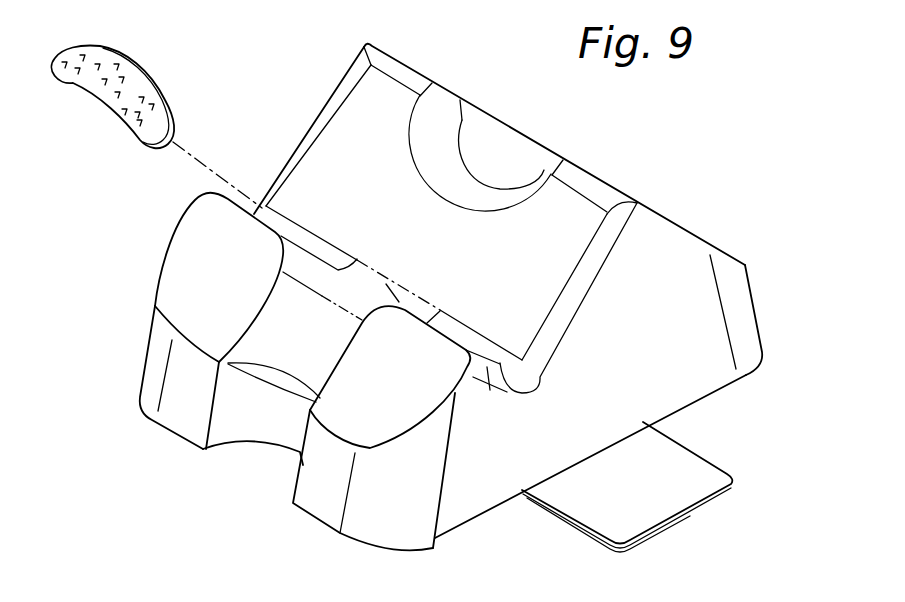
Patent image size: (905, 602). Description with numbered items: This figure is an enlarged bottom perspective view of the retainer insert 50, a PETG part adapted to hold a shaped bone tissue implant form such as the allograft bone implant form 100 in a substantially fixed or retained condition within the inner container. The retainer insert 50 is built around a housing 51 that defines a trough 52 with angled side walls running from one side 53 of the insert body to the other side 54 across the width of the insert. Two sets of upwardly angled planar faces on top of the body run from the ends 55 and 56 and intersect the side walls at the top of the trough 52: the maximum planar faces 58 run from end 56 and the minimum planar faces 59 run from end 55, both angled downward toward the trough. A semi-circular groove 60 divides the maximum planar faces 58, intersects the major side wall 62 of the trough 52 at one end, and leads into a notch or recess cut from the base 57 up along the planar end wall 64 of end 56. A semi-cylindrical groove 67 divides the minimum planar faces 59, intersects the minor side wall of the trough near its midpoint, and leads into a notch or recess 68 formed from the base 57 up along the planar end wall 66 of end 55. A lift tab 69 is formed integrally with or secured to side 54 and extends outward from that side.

The retainer insert 50 is at (767, 348).
The housing 51 is at (672, 410).
The trough 52 is at (483, 386).
The side 53 is at (318, 138).
The side 54 is at (670, 354).
The end 55 is at (163, 427).
The end 56 is at (705, 244).
The base 57 is at (445, 537).
The maximum planar faces 58 is at (633, 204).
The minimum planar faces 59 is at (226, 289).
The semi-circular groove 60 is at (507, 163).
The major side wall 62 is at (518, 274).
The planar end wall 64 is at (756, 320).
The planar end wall 66 is at (316, 511).
The semi-cylindrical groove 67 is at (313, 354).
The notch or recess 68 is at (262, 446).
The lift tab 69 is at (677, 505).
The allograft bone implant form 100 is at (103, 103).